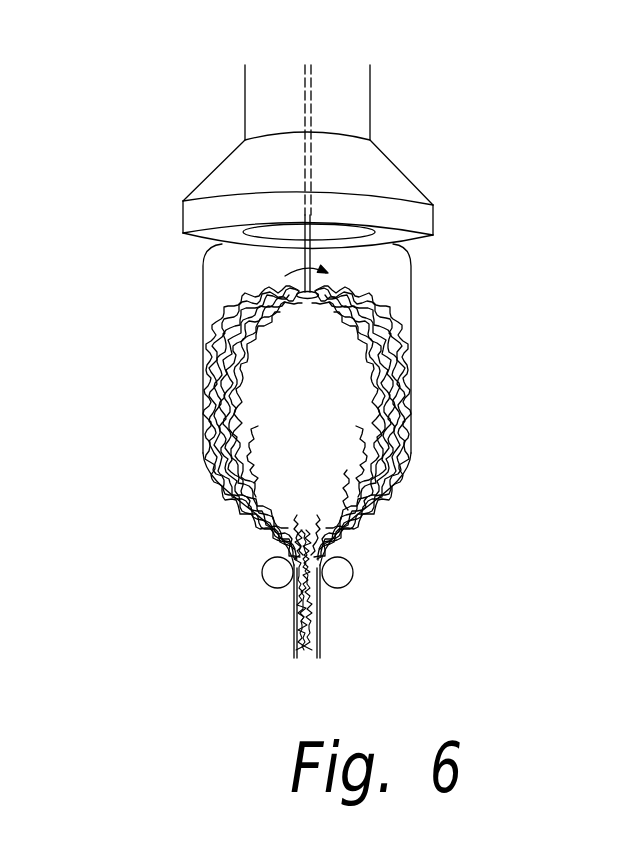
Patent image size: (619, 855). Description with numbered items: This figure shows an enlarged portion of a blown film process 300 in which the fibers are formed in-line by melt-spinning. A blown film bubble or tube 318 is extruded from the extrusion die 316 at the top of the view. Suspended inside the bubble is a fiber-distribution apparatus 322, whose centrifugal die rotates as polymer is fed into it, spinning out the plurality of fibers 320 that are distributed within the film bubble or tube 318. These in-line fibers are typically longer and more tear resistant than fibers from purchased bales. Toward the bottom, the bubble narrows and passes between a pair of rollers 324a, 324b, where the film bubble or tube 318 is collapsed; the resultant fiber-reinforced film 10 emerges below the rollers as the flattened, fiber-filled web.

The blown film process 300 is at (522, 464).
The extrusion die 316 is at (427, 220).
The blown film bubble 318 is at (203, 412).
The plurality of fibers 320 is at (412, 333).
The fiber-distribution apparatus 322 is at (305, 257).
The roller 324a is at (353, 572).
The roller 324b is at (262, 573).
The fiber-reinforced film 10 is at (327, 638).